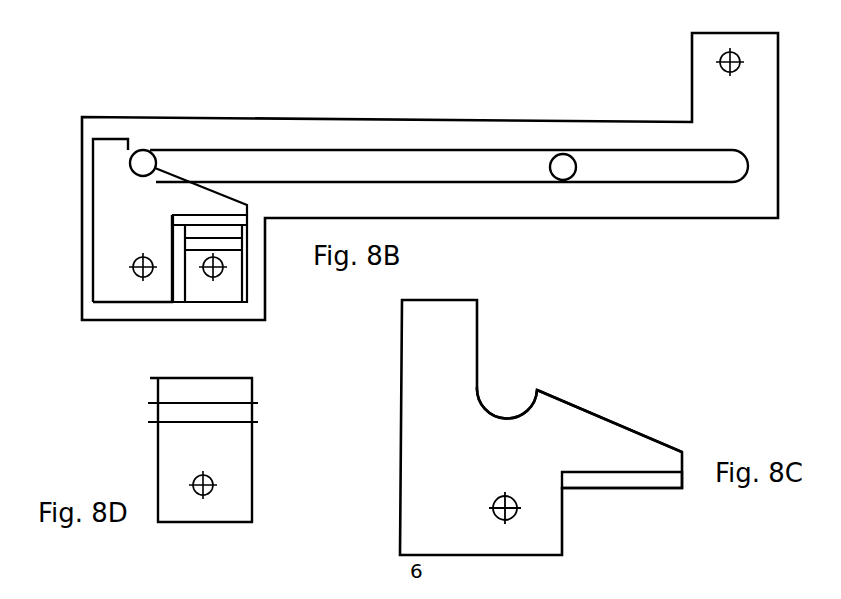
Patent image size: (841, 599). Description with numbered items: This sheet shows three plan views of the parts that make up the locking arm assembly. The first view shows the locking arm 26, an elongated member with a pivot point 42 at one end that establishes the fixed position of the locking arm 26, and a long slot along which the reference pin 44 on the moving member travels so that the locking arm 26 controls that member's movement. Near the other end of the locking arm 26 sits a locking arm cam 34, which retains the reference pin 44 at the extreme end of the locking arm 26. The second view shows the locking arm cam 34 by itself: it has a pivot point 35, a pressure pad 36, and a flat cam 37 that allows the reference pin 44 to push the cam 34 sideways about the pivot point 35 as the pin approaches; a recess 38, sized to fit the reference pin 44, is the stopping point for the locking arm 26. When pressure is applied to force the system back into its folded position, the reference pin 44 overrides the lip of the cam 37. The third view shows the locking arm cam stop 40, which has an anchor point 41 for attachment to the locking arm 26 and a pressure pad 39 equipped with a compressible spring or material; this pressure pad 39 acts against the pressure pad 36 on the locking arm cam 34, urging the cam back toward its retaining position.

In FIG. 8B, the locking arm 26 is at (330, 132).
In FIG. 8B, the locking arm cam 34 is at (123, 225).
In FIG. 8C, the locking arm cam 34 is at (452, 457).
In FIG. 8C, the pivot point 35 is at (518, 516).
In FIG. 8C, the pressure pad 36 is at (615, 480).
In FIG. 8C, the flat cam 37 is at (580, 402).
In FIG. 8C, the recess 38 is at (502, 390).
In FIG. 8D, the pressure pad 39 is at (222, 390).
In FIG. 8B, the locking arm cam stop 40 is at (232, 285).
In FIG. 8D, the locking arm cam stop 40 is at (178, 412).
In FIG. 8D, the anchor point 41 is at (192, 482).
In FIG. 8B, the pivot point 42 is at (717, 60).
In FIG. 8B, the reference pin 44 is at (143, 158).